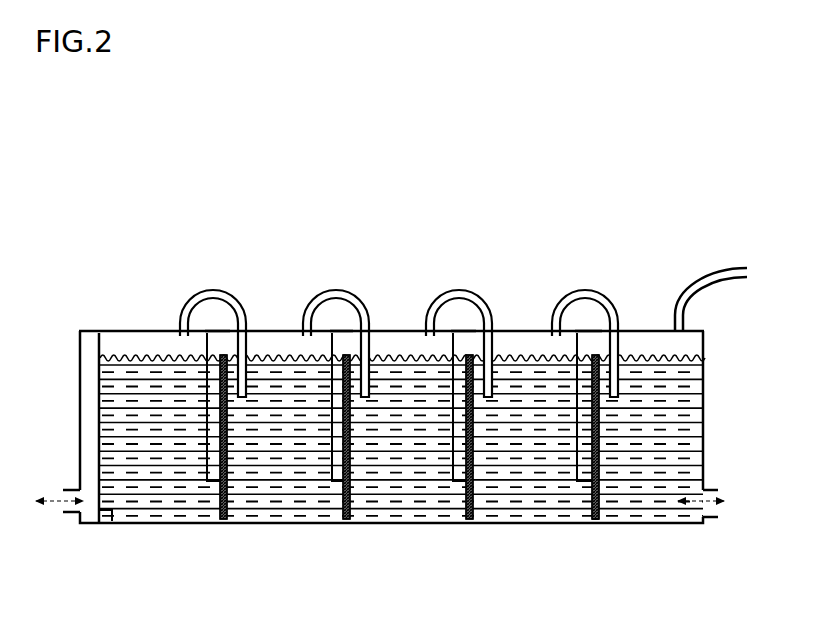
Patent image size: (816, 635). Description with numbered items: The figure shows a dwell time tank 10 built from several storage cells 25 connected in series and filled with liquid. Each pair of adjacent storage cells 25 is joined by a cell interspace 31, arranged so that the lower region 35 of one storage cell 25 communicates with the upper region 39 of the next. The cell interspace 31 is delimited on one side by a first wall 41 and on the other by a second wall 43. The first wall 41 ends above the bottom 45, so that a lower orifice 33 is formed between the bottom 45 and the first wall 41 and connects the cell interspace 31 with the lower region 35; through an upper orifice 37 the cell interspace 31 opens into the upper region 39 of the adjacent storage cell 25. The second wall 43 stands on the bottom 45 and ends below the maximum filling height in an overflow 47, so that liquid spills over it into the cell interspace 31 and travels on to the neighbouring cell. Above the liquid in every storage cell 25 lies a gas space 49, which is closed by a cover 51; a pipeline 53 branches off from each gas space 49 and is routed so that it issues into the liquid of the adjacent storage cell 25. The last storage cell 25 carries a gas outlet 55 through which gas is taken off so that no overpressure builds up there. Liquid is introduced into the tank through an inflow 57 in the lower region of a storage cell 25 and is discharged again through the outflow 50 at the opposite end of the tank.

The electrolysis apparatus 10 is at (714, 418).
The storage cell 25 is at (500, 327).
The cell interspace 31 is at (222, 360).
The lower orifice 33 is at (197, 497).
The lower region 35 is at (107, 523).
The upper orifice 37 is at (213, 290).
The upper region 39 is at (537, 350).
The first wall 41 is at (203, 415).
The second wall 43 is at (490, 400).
The bottom 45 is at (590, 525).
The overflow 47 is at (366, 323).
The gas space 49 is at (103, 338).
The inlet 50 is at (75, 487).
The cover 51 is at (133, 328).
The pipeline 53 is at (217, 334).
The gas outlet 55 is at (727, 270).
The inflow 57 is at (725, 505).